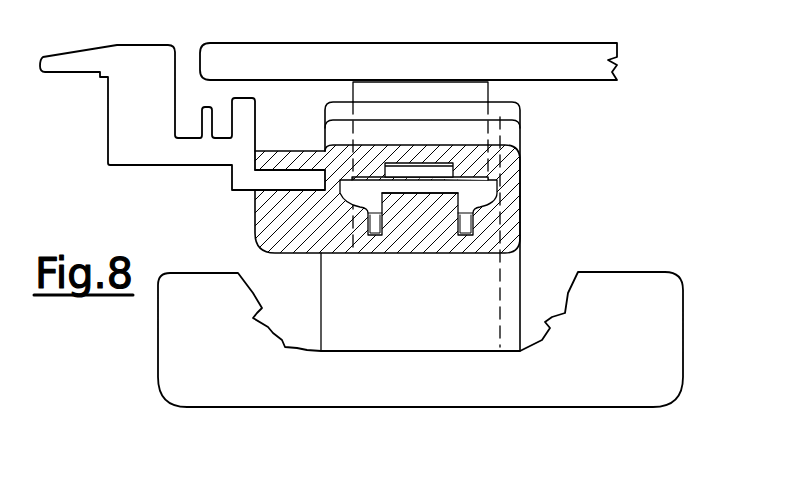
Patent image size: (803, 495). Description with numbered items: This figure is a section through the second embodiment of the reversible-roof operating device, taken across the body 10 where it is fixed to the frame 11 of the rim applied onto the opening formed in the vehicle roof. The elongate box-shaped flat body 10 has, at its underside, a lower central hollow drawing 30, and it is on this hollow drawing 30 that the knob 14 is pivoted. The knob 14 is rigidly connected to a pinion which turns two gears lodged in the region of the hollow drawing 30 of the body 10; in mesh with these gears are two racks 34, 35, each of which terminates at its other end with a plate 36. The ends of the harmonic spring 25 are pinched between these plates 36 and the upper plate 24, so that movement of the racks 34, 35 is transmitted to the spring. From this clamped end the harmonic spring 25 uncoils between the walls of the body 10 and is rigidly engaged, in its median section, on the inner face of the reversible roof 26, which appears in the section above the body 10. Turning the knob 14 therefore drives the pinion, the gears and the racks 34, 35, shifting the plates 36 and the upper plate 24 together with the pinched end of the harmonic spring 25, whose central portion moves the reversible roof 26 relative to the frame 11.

The body 10 is at (288, 157).
The frame 11 is at (140, 135).
The knob 14 is at (660, 338).
The upper plate 24 is at (422, 170).
The harmonic spring 25 is at (435, 82).
The reversible roof 26 is at (553, 57).
The lower central hollow drawing 30 is at (508, 303).
The rack 34 is at (470, 203).
The rack 35 is at (345, 203).
The plate 36 is at (433, 190).